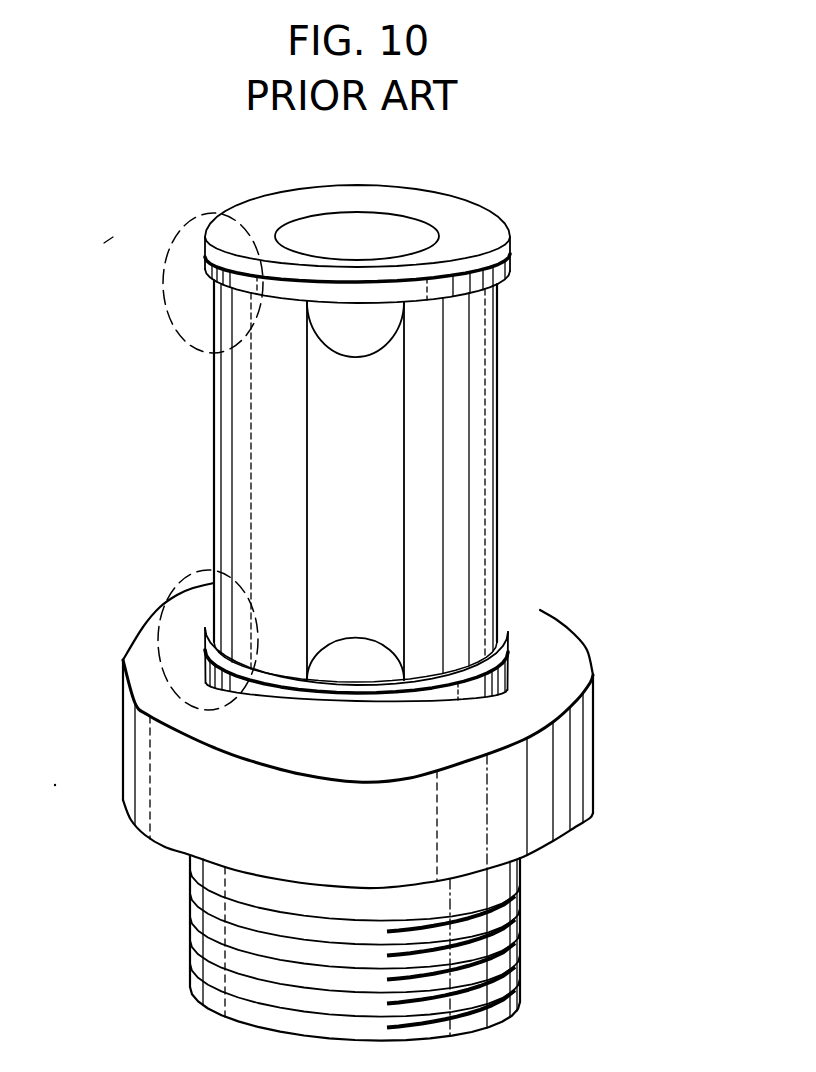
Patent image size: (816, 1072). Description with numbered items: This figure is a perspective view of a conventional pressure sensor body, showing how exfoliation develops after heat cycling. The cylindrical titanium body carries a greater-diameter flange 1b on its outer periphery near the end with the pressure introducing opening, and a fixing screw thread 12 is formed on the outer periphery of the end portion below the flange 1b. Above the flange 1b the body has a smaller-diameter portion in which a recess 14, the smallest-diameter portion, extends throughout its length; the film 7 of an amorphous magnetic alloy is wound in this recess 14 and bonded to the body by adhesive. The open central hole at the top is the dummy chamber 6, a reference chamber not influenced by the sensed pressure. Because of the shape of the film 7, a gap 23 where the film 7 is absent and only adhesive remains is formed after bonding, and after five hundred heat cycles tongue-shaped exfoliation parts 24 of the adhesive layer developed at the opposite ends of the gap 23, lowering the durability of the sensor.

The greater-diameter flange 1b is at (553, 773).
The dummy chamber 6 is at (387, 230).
The film of amorphous magnetic alloy 7 is at (458, 442).
The fixing screw thread 12 is at (467, 960).
The recess 14 is at (162, 280).
The gap 23 is at (368, 521).
The exfoliation parts 24 is at (373, 323).